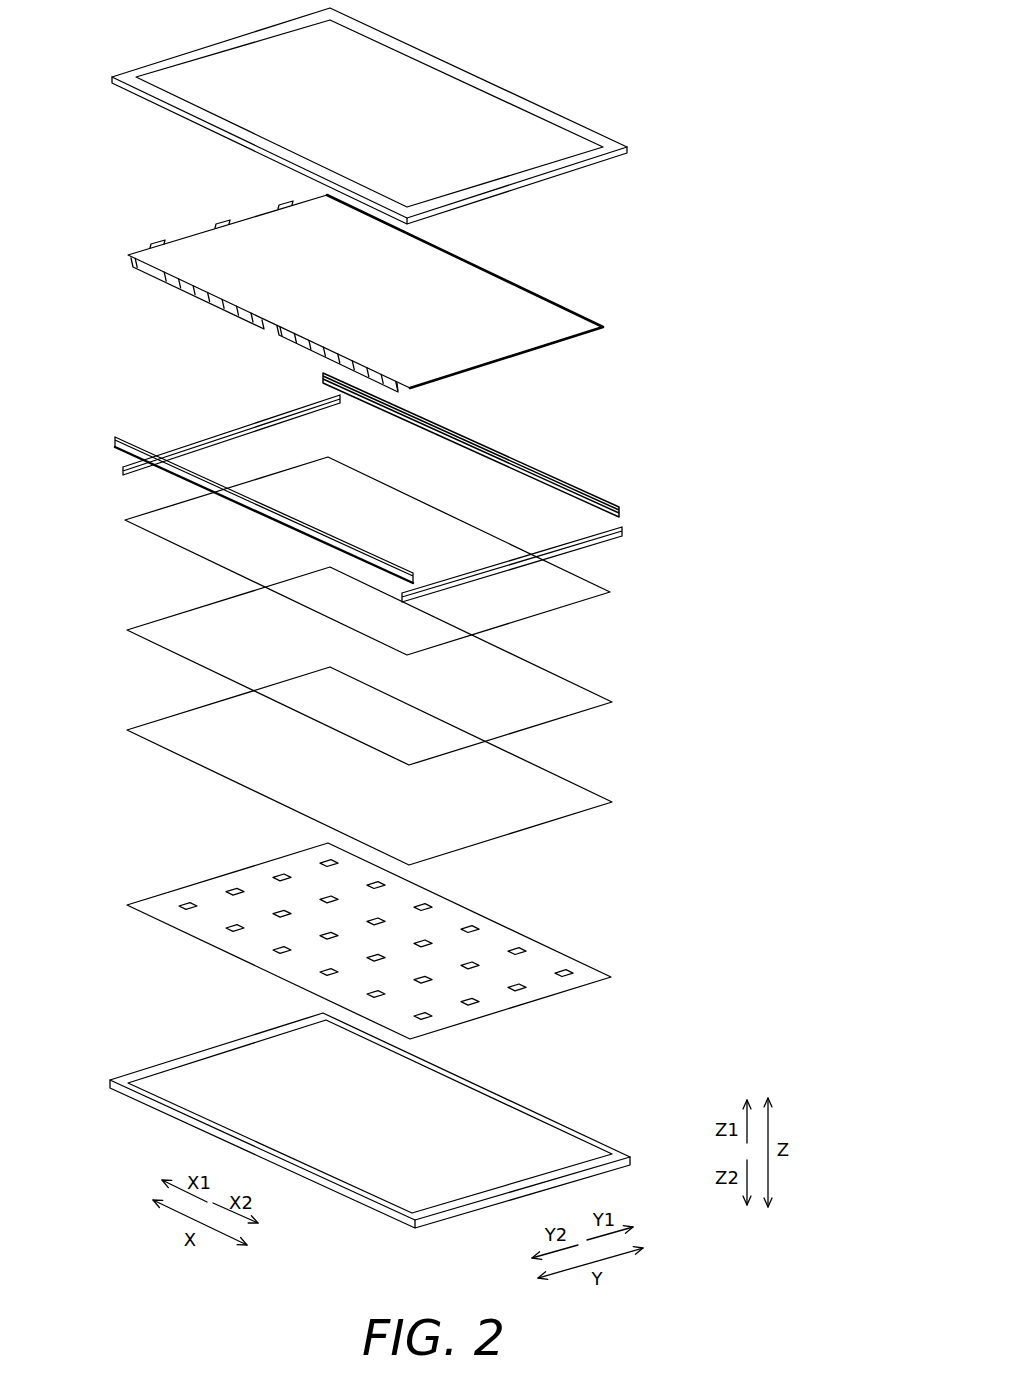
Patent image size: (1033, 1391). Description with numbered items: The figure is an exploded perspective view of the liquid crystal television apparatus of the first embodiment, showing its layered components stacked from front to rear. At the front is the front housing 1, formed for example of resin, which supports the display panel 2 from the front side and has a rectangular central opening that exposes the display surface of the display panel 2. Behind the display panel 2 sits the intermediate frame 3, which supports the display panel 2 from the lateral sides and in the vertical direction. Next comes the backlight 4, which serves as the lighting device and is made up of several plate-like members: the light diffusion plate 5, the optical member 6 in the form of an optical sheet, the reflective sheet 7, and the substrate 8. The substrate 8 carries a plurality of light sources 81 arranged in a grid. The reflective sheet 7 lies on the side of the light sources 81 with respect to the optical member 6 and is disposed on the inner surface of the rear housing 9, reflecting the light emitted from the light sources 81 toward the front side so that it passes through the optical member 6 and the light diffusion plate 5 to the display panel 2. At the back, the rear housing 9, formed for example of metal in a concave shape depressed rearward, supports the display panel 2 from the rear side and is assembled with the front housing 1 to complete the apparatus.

The front housing 1 is at (628, 149).
The display panel 2 is at (569, 323).
The intermediate frame 3 is at (600, 482).
The backlight 4 is at (680, 537).
The light diffusion plate 5 is at (576, 596).
The optical member 6 is at (582, 705).
The reflective sheet 7 is at (582, 805).
The substrate 8 is at (390, 922).
The light source 81 is at (184, 903).
The rear housing 9 is at (550, 1148).